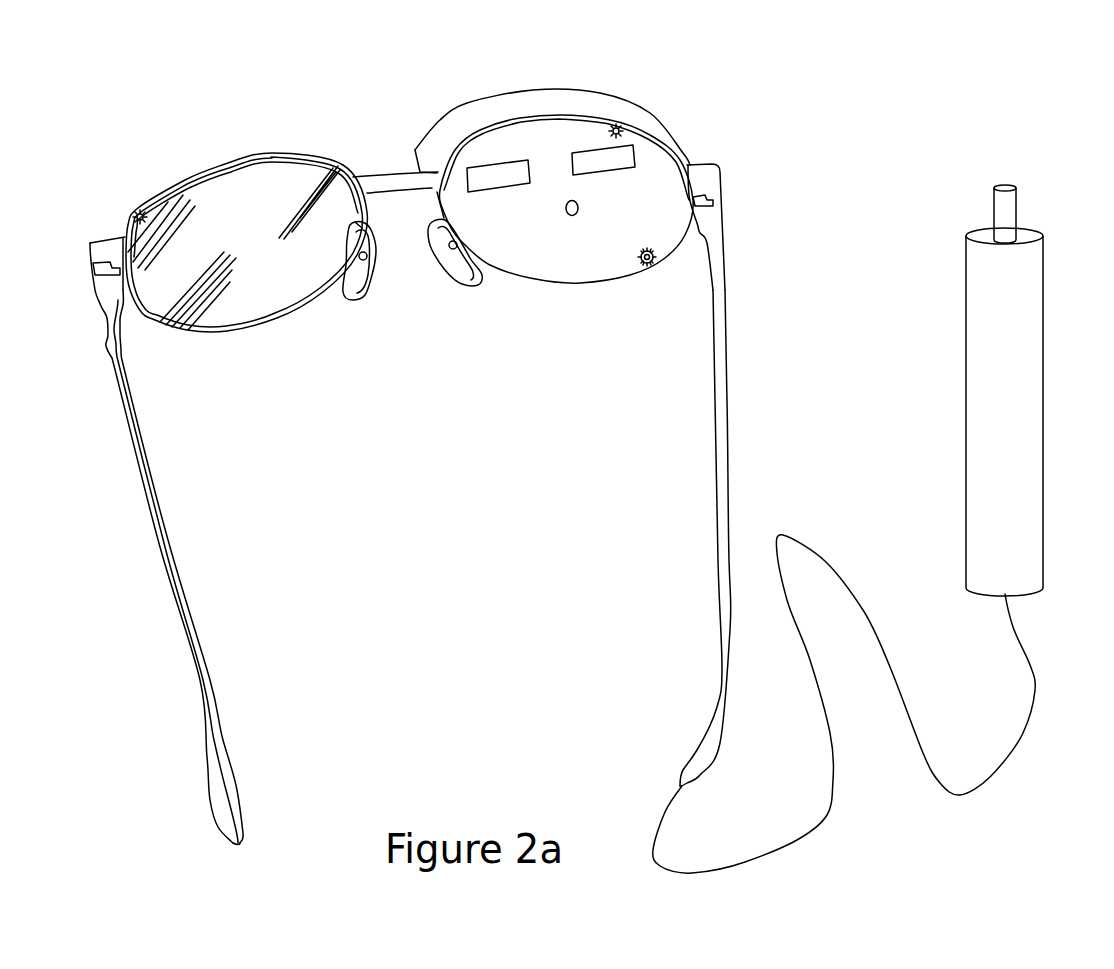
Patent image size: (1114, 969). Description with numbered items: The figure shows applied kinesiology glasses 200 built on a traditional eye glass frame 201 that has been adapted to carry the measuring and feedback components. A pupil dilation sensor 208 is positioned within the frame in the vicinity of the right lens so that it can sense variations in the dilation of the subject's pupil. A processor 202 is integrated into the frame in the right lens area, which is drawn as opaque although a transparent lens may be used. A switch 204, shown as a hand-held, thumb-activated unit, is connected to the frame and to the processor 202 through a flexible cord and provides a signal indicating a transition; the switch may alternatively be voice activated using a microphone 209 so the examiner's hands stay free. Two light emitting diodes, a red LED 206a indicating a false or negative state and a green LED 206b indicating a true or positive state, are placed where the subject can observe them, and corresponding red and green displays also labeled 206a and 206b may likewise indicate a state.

The eyeglasses assembly 200 is at (698, 148).
The eye glass frame 201 is at (170, 535).
The processor 202 is at (580, 100).
The switch 204 is at (1037, 232).
The red light emitting diode 206a is at (140, 208).
The green light emitting diode 206b is at (633, 128).
The pupil dilation sensor 208 is at (577, 217).
The microphone 209 is at (653, 267).